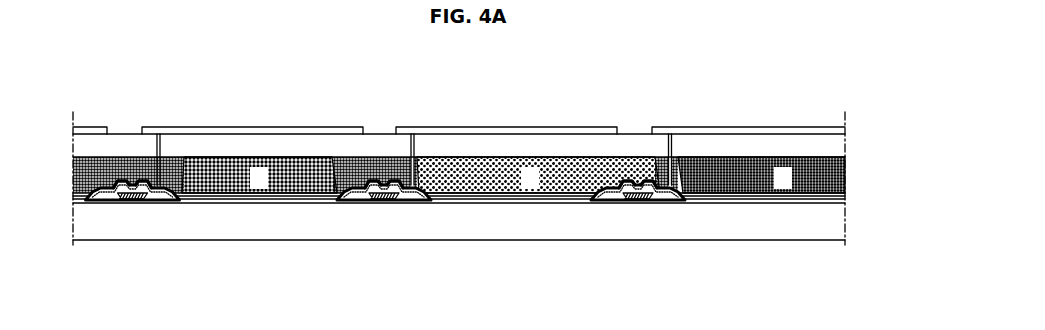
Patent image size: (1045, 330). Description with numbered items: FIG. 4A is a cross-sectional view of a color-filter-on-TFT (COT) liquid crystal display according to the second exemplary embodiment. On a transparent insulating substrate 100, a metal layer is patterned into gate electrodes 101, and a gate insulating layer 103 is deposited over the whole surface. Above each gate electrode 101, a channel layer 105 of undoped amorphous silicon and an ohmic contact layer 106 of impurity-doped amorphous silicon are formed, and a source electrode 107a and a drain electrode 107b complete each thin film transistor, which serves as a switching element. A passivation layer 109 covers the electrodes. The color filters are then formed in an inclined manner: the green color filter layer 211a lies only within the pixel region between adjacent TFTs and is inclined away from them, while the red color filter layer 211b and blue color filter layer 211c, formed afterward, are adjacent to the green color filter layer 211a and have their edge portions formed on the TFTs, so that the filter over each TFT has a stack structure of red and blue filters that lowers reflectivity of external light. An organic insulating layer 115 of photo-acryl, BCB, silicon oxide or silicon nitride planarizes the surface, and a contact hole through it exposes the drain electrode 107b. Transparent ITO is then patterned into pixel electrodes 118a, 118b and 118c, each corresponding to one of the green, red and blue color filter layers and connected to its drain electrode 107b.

The transparent insulating substrate 100 is at (846, 221).
The gate electrode 101 is at (636, 201).
The gate insulating layer 103 is at (846, 199).
The channel layer 105 is at (668, 197).
The ohmic contact layer 106 is at (611, 191).
The source electrode 107a is at (627, 179).
The drain electrode 107b is at (647, 179).
The passivation layer 109 is at (846, 194).
The organic insulating layer 115 is at (846, 137).
The pixel electrode 118a is at (250, 128).
The pixel electrode 118b is at (508, 128).
The pixel electrode 118c is at (750, 127).
The green color filter layer 211a is at (253, 194).
The red color filter layer 211b is at (510, 194).
The blue color filter layer 211c is at (778, 194).